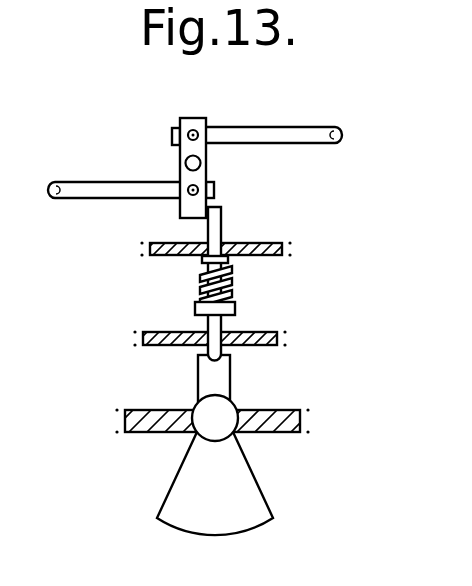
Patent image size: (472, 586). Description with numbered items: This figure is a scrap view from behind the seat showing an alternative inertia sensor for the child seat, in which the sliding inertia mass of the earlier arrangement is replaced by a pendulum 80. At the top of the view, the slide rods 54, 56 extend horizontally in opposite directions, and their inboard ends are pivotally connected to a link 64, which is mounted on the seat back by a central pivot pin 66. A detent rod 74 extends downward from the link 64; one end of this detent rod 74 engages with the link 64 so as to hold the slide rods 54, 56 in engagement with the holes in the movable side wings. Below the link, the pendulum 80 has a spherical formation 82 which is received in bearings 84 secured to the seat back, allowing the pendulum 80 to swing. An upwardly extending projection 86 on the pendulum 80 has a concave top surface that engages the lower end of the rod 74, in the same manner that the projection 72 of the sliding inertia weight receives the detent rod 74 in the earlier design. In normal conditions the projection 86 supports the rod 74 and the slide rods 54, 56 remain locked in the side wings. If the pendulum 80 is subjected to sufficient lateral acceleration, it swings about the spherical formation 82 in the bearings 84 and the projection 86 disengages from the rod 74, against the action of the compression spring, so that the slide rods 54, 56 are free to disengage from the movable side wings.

The slide rod 54 is at (288, 127).
The slide rod 56 is at (84, 198).
The link 64 is at (206, 172).
The central pivot pin 66 is at (207, 163).
The projection 72 is at (220, 226).
The detent rod 74 is at (232, 291).
The pendulum 80 is at (238, 490).
The spherical formation 82 is at (222, 412).
The bearings 84 is at (157, 422).
The upwardly extending projection 86 is at (198, 373).